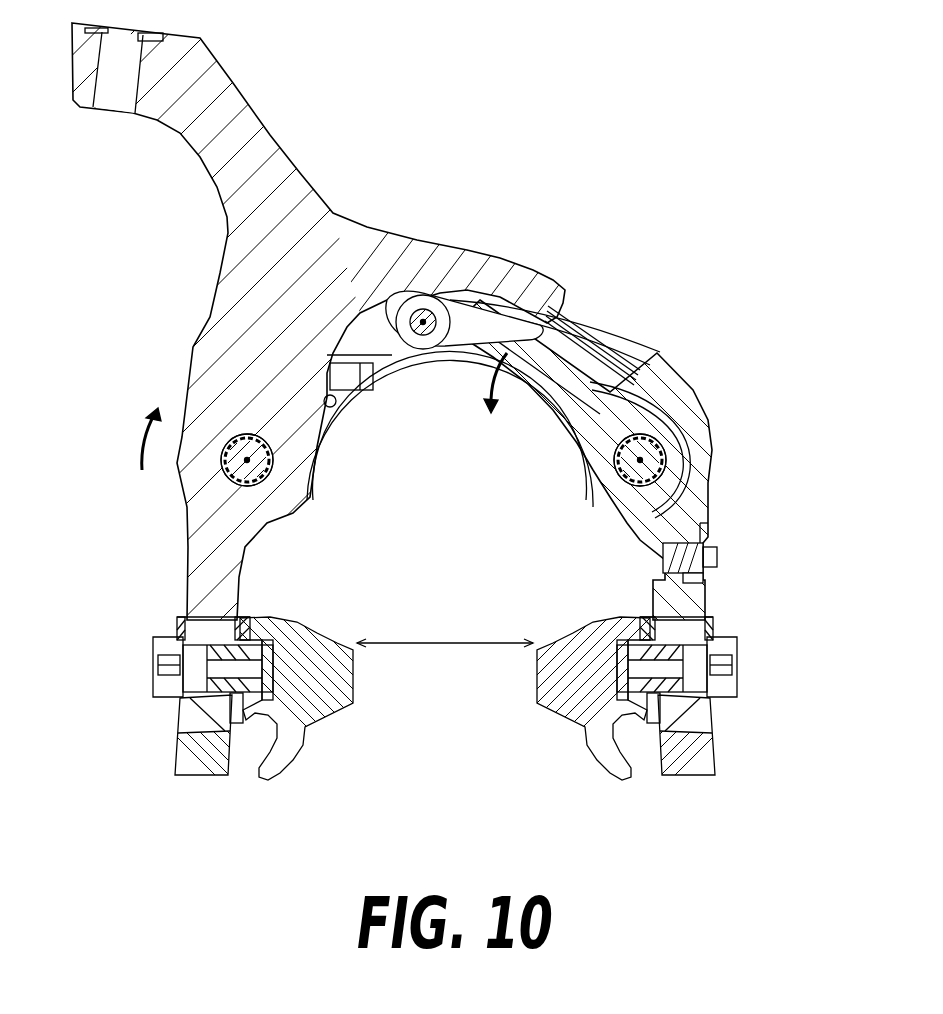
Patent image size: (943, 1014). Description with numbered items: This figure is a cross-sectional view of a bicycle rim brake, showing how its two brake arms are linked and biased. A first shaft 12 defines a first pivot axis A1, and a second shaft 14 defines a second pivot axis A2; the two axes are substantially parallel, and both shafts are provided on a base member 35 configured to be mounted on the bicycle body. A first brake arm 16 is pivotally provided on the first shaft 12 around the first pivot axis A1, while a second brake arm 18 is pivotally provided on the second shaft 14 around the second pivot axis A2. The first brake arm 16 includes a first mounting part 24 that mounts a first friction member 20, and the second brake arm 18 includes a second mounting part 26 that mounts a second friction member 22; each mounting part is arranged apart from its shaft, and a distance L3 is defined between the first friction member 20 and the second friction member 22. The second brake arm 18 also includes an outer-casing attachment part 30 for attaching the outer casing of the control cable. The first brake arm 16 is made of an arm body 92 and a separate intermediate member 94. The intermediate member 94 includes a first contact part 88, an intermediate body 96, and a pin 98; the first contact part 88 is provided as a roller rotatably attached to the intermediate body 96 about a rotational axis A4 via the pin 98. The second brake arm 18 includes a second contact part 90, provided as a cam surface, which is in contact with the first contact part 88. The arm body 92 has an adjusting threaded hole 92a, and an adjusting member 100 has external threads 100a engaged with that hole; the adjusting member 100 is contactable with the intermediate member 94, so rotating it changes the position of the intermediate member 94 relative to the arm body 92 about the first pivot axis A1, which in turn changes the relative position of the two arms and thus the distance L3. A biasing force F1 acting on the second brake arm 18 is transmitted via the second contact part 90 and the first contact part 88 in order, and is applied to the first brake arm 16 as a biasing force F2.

The first shaft 12 is at (606, 457).
The second shaft 14 is at (277, 460).
The first brake arm 16 is at (471, 507).
The second brake arm 18 is at (350, 214).
The first friction member 20 is at (582, 733).
The second friction member 22 is at (318, 733).
The first mounting part 24 is at (697, 762).
The second mounting part 26 is at (202, 765).
The outer-casing attachment part 30 is at (85, 63).
The base member 35 is at (586, 315).
The first contact part 88 is at (410, 334).
The second contact part 90 is at (373, 318).
The arm body 92 is at (707, 413).
The intermediate member 94 is at (610, 305).
The intermediate body 96 is at (533, 373).
The pin 98 is at (418, 334).
The adjusting member 100 is at (713, 560).
The external threads 100a is at (690, 583).
The adjusting threaded hole 92a is at (700, 543).
The first pivot axis A1 is at (640, 460).
The second pivot axis A2 is at (247, 460).
The rotational axis A4 is at (424, 318).
The biasing force F1 is at (137, 440).
The biasing force F2 is at (488, 387).
The distance L3 is at (455, 646).